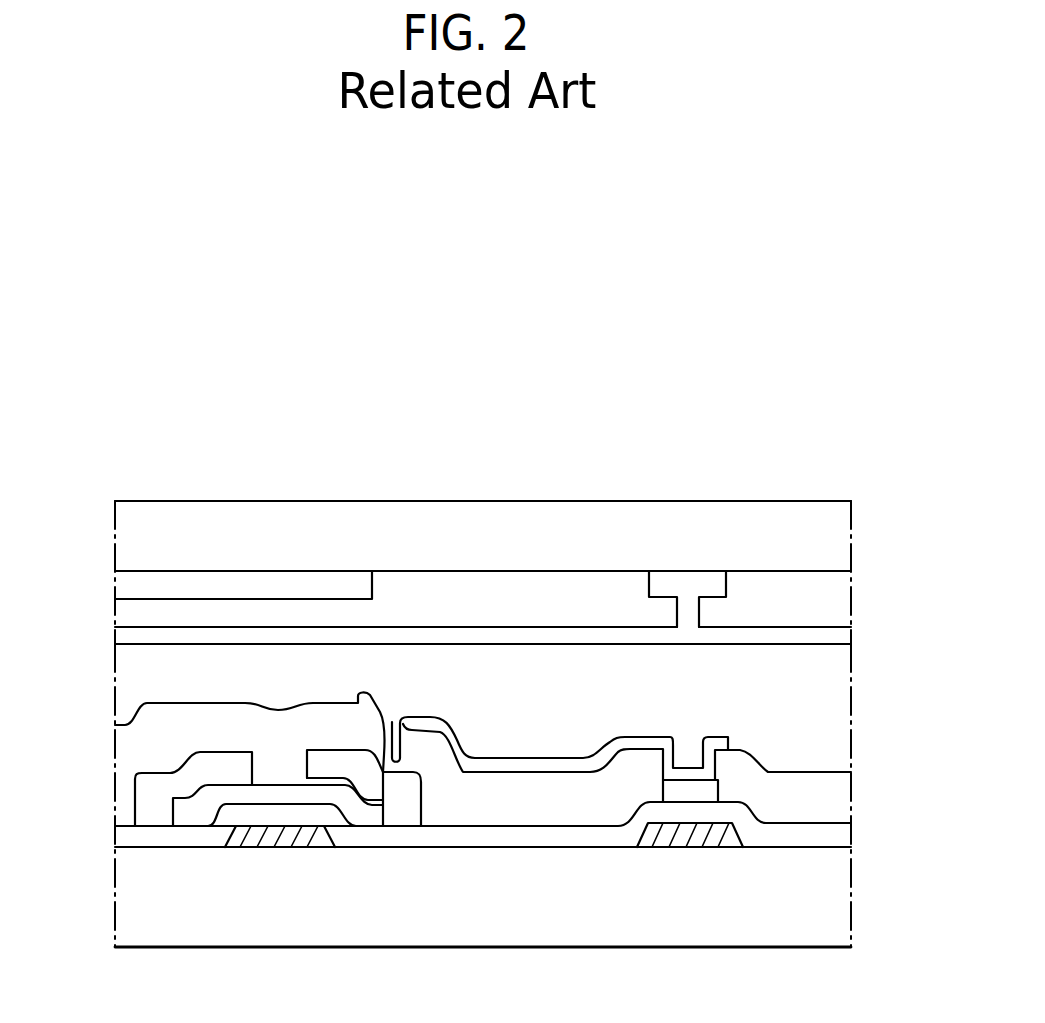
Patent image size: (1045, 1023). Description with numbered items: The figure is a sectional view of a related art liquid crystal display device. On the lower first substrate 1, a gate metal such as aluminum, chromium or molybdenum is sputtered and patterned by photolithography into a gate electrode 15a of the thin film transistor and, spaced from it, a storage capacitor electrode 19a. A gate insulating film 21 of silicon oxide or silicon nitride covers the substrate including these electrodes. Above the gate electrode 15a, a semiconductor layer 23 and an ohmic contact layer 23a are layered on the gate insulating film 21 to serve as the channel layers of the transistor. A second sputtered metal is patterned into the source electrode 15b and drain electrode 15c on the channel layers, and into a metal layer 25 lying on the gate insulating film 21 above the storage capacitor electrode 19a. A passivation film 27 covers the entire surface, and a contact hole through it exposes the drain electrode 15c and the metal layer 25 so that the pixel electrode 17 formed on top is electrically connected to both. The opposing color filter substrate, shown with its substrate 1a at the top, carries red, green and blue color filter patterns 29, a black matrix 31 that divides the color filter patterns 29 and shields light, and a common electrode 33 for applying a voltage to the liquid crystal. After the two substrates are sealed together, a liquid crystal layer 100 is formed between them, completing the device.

The first substrate 1 is at (837, 893).
The upper substrate 1a is at (833, 522).
The gate electrode 15a is at (277, 830).
The source electrode 15b is at (183, 773).
The drain electrode 15c is at (400, 803).
The pixel electrode 17 is at (650, 737).
The storage capacitor electrode 19a is at (686, 838).
The gate insulating film 21 is at (837, 835).
The semiconductor layer 23 is at (190, 814).
The ohmic contact layer 23a is at (177, 798).
The metal layer 25 is at (708, 790).
The passivation film 27 is at (827, 782).
The color filter patterns 29 is at (833, 600).
The black matrix 31 is at (703, 578).
The common electrode 33 is at (833, 635).
The liquid crystal layer 100 is at (835, 673).